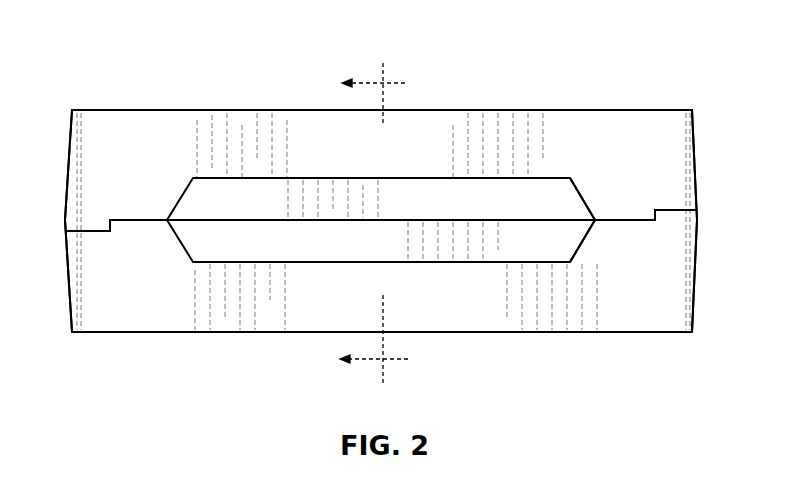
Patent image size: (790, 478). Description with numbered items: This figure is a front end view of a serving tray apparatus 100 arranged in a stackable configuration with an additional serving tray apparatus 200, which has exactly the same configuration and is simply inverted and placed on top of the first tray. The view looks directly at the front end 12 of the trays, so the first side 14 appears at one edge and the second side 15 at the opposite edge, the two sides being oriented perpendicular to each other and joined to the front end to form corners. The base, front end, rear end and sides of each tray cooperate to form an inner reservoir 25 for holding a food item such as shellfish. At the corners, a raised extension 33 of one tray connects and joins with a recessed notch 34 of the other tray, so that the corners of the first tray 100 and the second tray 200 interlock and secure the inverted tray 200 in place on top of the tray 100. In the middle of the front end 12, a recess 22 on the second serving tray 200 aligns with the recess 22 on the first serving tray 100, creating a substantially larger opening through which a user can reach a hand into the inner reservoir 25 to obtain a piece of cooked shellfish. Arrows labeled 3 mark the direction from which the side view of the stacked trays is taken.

The second serving tray apparatus 200 is at (151, 82).
The serving tray apparatus 100 is at (165, 352).
The front end 12 is at (443, 122).
The first side 14 is at (69, 136).
The second side 15 is at (72, 307).
The recess 22 is at (583, 195).
The inner reservoir 25 is at (221, 197).
The raised extension 33 is at (68, 218).
The recessed notch 34 is at (80, 233).
The section line 3- 3 is at (374, 223).